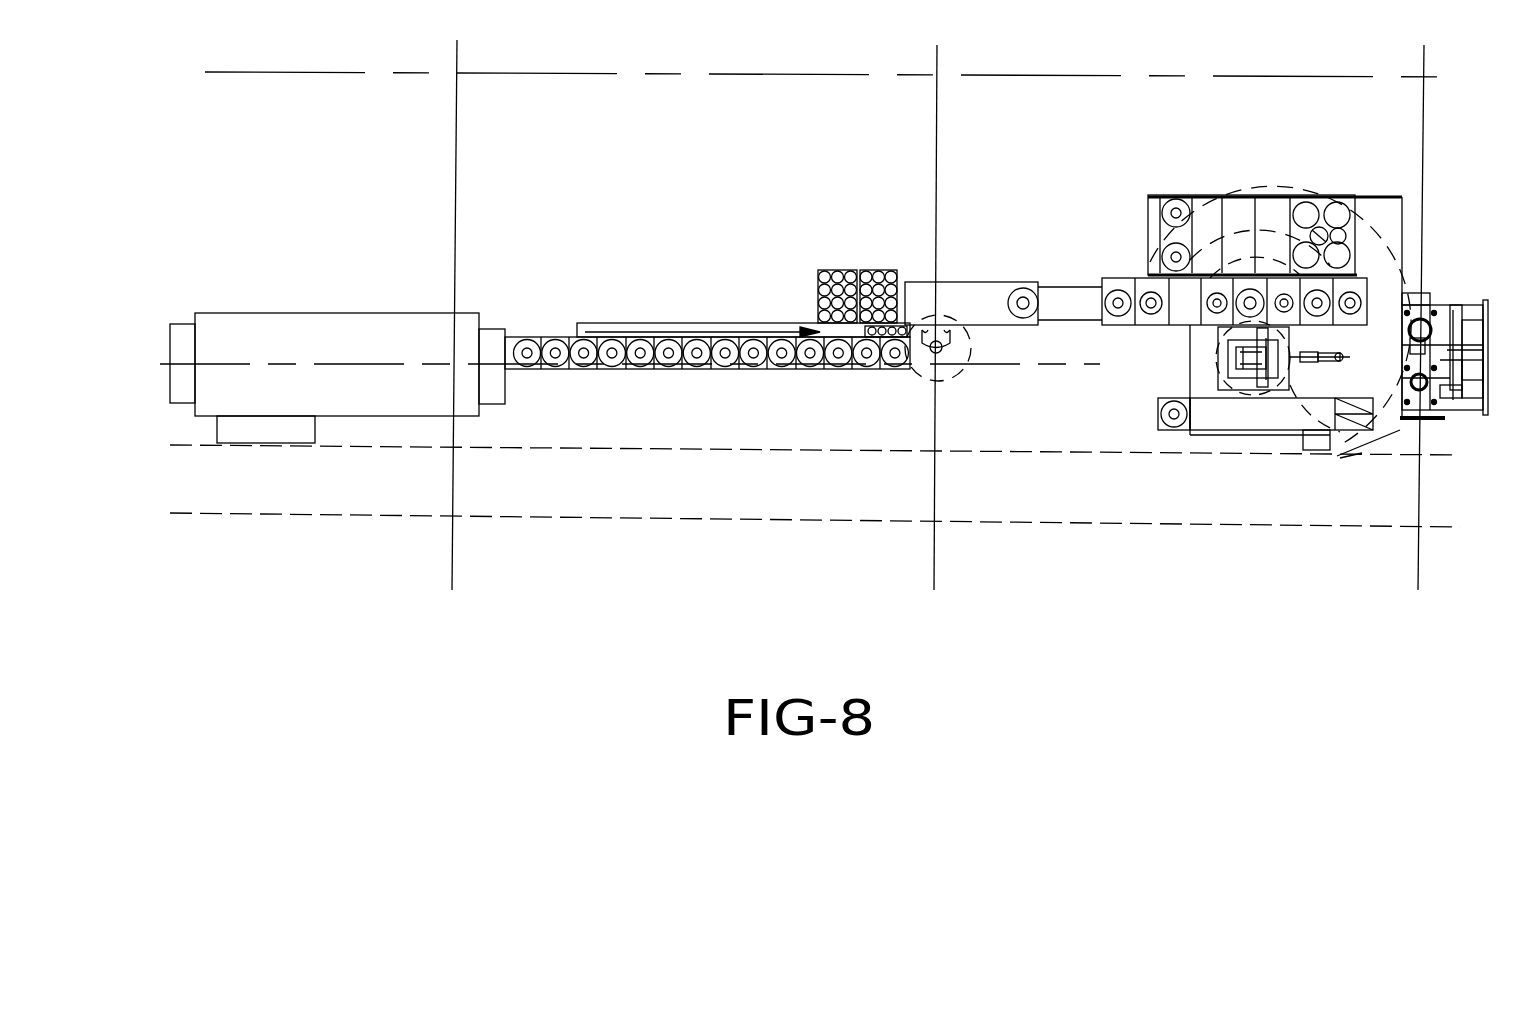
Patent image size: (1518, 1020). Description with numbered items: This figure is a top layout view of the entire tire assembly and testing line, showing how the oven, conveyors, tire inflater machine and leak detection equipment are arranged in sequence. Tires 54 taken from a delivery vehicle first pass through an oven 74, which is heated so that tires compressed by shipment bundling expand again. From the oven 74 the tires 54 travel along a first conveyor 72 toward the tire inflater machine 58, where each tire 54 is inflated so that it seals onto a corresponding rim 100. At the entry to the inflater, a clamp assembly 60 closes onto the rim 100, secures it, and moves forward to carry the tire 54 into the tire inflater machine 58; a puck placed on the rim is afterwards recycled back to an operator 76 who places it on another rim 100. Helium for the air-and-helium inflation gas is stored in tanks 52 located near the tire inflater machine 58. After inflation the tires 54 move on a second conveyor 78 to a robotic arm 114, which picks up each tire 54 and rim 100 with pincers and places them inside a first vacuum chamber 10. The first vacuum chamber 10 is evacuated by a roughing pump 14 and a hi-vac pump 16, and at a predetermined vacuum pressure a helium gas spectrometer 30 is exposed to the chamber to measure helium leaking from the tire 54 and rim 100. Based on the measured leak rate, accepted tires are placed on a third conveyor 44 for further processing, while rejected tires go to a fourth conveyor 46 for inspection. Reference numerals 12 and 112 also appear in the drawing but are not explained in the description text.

The first vacuum chamber 10 is at (1423, 412).
The frame assembly 12 is at (1415, 320).
The roughing pump 14 is at (1460, 405).
The hi-vac pump 16 is at (1453, 310).
The helium gas spectrometer 30 is at (1475, 327).
The third conveyor 44 is at (1310, 195).
The fourth conveyor 46 is at (1250, 418).
The tanks 52 is at (817, 293).
The tires 54 is at (800, 370).
The tire inflater machine 58 is at (988, 284).
The clamp assembly 60 is at (907, 283).
The first conveyor 72 is at (650, 369).
The oven 74 is at (250, 327).
The operator 76 is at (956, 366).
The second conveyor 78 is at (1150, 282).
The rim 100 is at (882, 370).
The feed direction 112 is at (822, 244).
The robotic arm 114 is at (1323, 360).